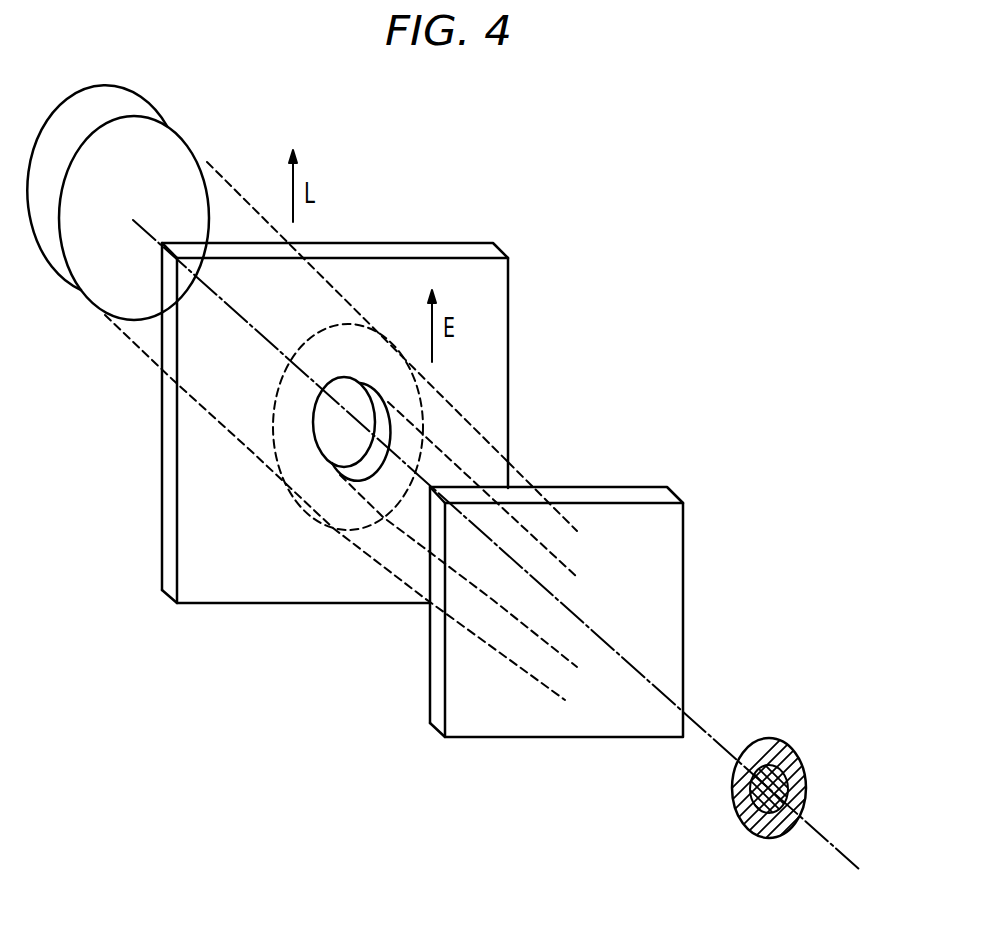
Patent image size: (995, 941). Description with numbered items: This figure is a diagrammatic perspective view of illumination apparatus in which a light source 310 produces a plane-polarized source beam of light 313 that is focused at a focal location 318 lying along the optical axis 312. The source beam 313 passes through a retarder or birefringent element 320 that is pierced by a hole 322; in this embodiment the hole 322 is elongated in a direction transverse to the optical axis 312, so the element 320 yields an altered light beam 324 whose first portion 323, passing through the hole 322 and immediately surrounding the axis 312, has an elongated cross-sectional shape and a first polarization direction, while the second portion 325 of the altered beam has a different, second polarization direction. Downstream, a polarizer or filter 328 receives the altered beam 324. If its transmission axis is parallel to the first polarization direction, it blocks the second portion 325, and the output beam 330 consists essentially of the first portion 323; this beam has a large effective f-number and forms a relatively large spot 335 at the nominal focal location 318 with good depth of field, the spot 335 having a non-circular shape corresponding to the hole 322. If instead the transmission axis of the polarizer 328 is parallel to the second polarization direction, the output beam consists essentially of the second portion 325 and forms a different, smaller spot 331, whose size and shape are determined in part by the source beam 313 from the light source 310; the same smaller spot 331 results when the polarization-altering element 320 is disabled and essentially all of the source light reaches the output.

The light source 310 is at (88, 83).
The optical axis 312 is at (595, 638).
The source beam of light 313 is at (207, 162).
The focal location 318 is at (790, 748).
The retarder or birefringent element 320 is at (505, 278).
The hole 322 is at (343, 392).
The first portion of the altered light beam 323 is at (427, 400).
The altered light beam 324 is at (350, 535).
The second portion of the altered beam 325 is at (516, 471).
The polarizer or filter 328 is at (675, 567).
The output beam 330 is at (598, 555).
The spot 331 is at (790, 768).
The spot 335 is at (767, 840).